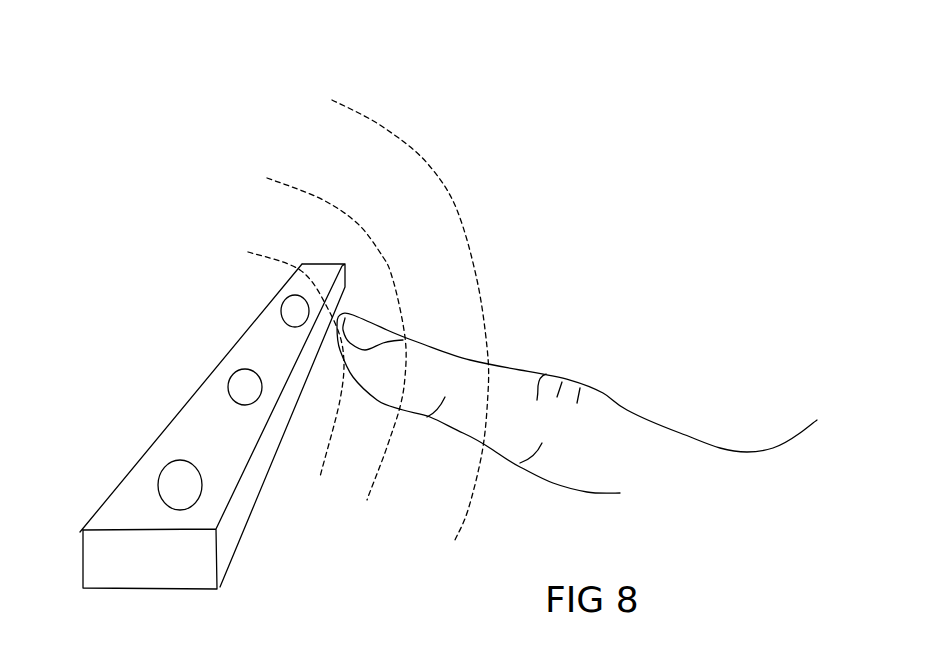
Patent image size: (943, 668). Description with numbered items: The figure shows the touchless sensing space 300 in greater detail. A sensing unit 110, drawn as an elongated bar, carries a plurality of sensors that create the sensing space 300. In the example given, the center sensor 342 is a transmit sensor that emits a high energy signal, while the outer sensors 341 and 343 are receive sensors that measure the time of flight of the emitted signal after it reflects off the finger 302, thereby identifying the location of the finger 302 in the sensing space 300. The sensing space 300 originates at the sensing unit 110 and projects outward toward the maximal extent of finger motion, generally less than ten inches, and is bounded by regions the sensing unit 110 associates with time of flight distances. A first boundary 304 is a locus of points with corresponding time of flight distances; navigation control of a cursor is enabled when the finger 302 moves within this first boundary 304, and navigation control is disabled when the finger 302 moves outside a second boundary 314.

The sensing unit 110 is at (250, 512).
The receive sensor 341 is at (168, 483).
The transmit sensor 342 is at (236, 385).
The receive sensor 343 is at (284, 318).
The first boundary 304 is at (247, 252).
The second boundary region 314 is at (340, 90).
The finger 302 is at (605, 393).
The touchless sensing space 300 is at (722, 175).